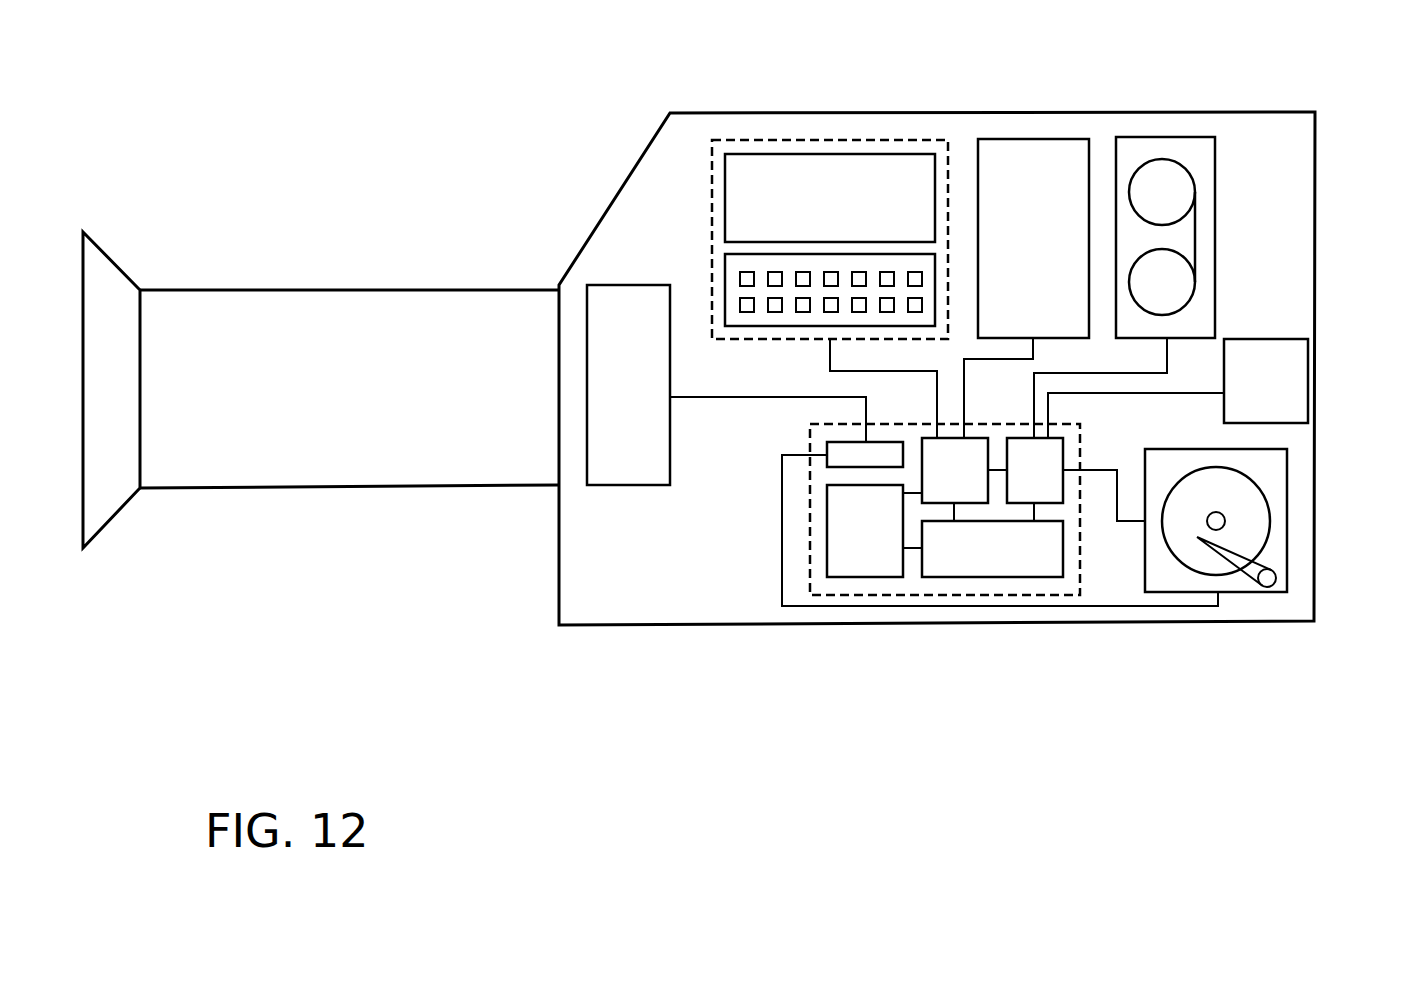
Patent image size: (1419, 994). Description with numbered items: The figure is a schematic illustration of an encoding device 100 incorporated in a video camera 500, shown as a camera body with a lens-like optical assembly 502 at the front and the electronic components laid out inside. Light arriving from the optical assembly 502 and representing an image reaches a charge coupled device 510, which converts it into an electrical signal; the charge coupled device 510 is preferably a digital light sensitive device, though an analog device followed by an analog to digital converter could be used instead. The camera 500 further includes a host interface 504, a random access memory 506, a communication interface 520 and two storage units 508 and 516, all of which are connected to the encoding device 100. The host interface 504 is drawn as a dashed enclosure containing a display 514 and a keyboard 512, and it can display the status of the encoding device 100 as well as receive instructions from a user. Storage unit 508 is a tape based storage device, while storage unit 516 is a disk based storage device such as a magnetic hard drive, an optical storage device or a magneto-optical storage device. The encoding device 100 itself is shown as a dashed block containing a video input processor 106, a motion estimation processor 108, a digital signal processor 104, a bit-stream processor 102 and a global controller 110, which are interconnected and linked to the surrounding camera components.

The encoding device 100 is at (858, 597).
The bit-stream processor 102 is at (1035, 470).
The digital signal processor 104 is at (992, 549).
The video input processor 106 is at (865, 455).
The motion estimation processor 108 is at (865, 531).
The global controller 110 is at (955, 470).
The video camera 500 is at (600, 215).
The optical assembly 502 is at (233, 290).
The host interface 504 is at (830, 139).
The random access memory 506 is at (1035, 139).
The storage unit 508 is at (1172, 137).
The charge coupled device 510 is at (615, 486).
The keyboard 512 is at (722, 292).
The display 514 is at (722, 198).
The storage unit 516 is at (1290, 468).
The communication interface 520 is at (1316, 380).